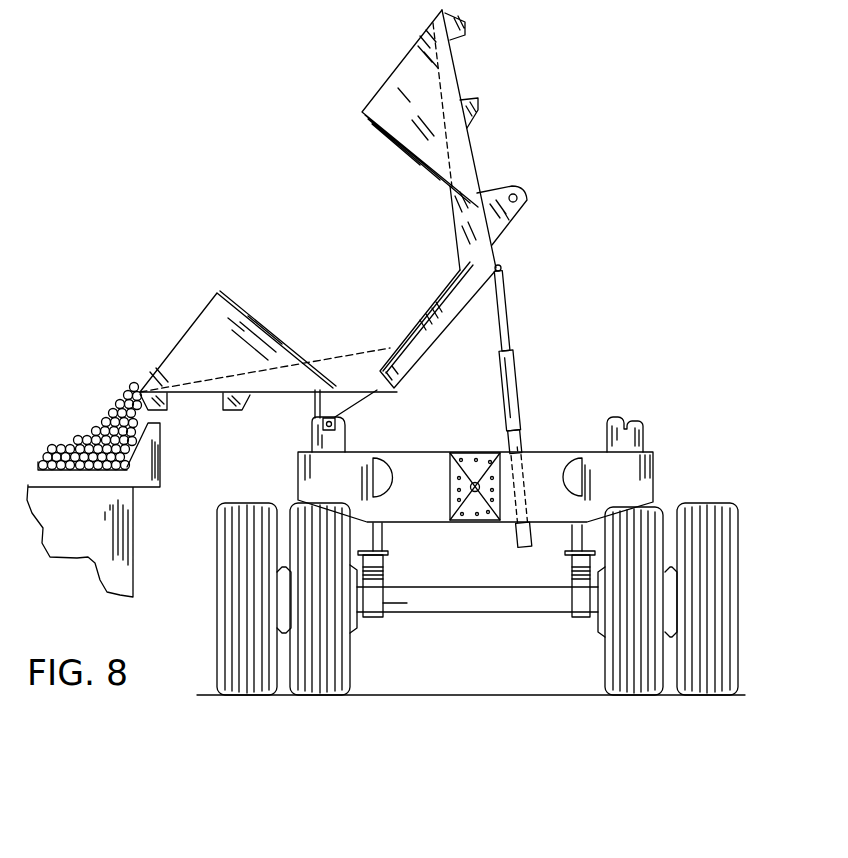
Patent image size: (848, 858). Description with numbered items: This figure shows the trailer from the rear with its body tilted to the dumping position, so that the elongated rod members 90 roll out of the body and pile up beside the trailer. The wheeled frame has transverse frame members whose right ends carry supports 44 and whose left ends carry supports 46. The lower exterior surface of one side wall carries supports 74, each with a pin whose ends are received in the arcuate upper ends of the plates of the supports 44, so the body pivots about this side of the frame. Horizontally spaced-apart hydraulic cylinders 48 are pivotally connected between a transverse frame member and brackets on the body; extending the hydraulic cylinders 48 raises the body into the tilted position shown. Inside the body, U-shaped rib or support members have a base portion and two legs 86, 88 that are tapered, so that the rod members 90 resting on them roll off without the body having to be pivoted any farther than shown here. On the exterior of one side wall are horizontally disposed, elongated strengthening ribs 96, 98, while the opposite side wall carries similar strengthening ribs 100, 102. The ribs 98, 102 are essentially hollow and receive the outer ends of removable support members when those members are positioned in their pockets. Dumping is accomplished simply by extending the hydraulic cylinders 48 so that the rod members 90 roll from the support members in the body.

The supports 44 is at (640, 435).
The supports 46 is at (338, 442).
The hydraulic cylinders 48 is at (485, 417).
The supports 74 is at (537, 173).
The leg 86 is at (333, 367).
The leg 88 is at (458, 230).
The rod members 90 is at (73, 443).
The strengthening rib 96 is at (167, 405).
The strengthening rib 98 is at (242, 412).
The strengthening rib 100 is at (466, 23).
The strengthening rib 102 is at (480, 108).